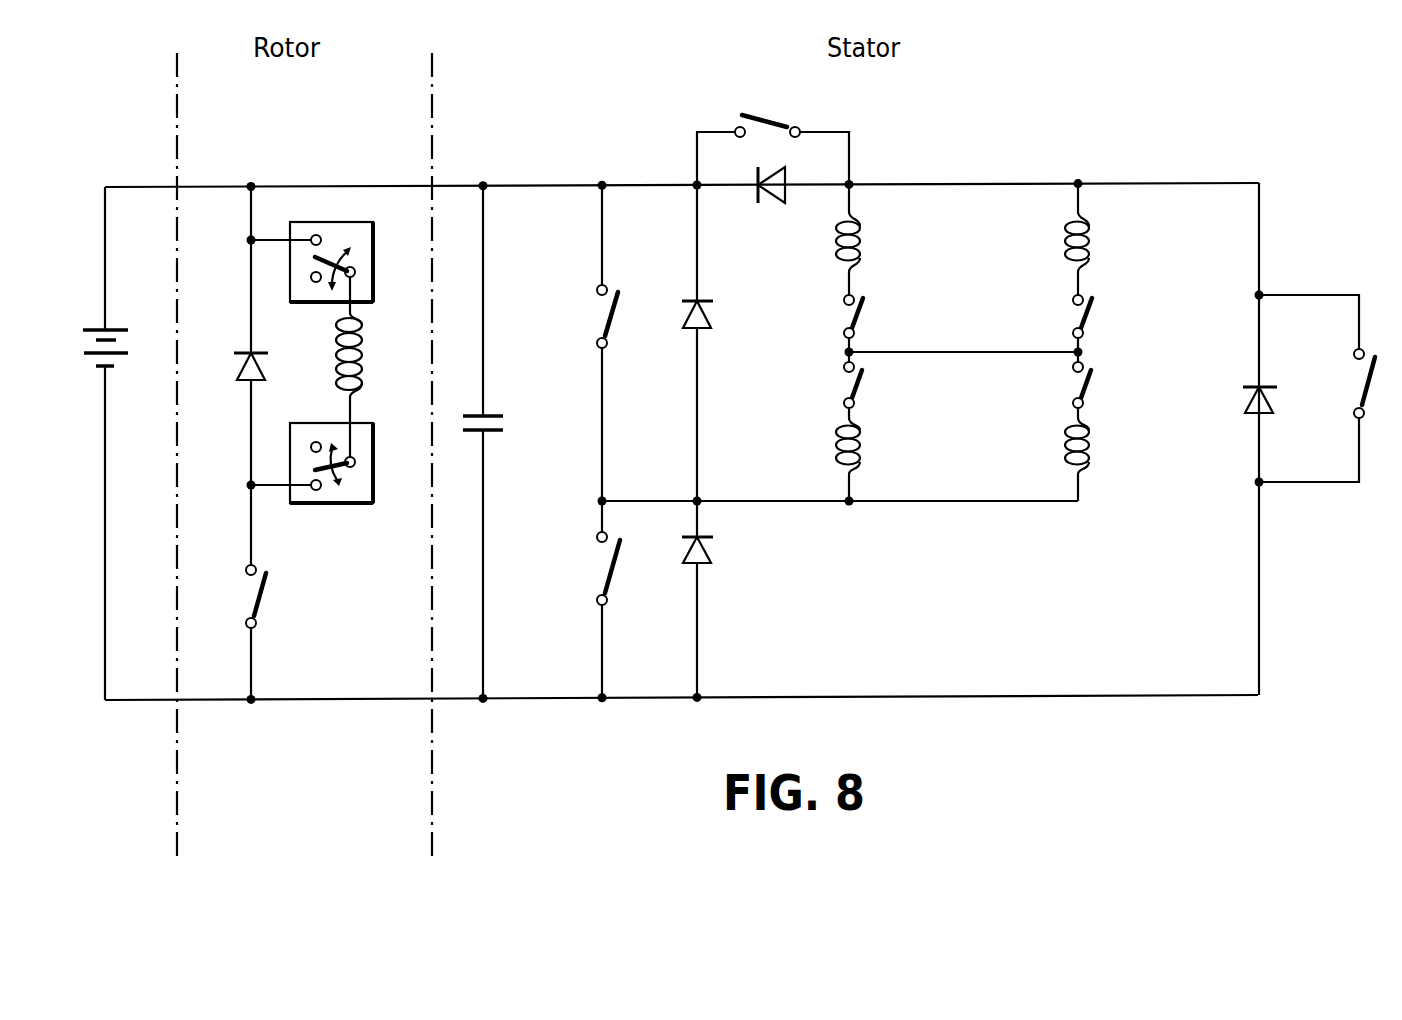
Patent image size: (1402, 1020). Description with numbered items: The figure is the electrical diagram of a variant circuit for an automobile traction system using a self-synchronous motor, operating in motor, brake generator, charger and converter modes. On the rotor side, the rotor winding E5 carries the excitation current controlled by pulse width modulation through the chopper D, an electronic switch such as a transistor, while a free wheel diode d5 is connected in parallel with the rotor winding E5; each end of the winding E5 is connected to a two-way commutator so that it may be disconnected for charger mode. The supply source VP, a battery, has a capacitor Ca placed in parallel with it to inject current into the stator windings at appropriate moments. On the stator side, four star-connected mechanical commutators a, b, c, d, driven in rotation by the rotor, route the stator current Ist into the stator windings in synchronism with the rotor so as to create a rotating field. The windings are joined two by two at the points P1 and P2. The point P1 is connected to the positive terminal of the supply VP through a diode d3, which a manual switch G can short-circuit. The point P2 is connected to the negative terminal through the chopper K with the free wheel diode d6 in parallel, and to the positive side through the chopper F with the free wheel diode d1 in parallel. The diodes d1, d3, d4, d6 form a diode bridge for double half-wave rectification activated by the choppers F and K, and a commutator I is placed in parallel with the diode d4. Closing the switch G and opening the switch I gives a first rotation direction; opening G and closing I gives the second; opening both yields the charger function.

The supply source VP is at (95, 443).
The free wheel diode d5 is at (234, 365).
The rotor winding E5 is at (366, 367).
The chopper D is at (244, 596).
The capacitor Ca is at (496, 442).
The chopper F is at (597, 316).
The chopper K is at (598, 568).
The free wheel diode d1 is at (717, 316).
The free wheel diode d6 is at (716, 559).
The manual switch G is at (773, 137).
The diode d3 is at (777, 200).
The point P1 is at (856, 181).
The point P2 is at (849, 504).
The commutator a is at (858, 268).
The commutator b is at (1086, 265).
The commutator c is at (858, 426).
The commutator d is at (1086, 426).
The diode d4 is at (1242, 389).
The commutator I is at (1322, 388).
The stator current Ist is at (412, 150).